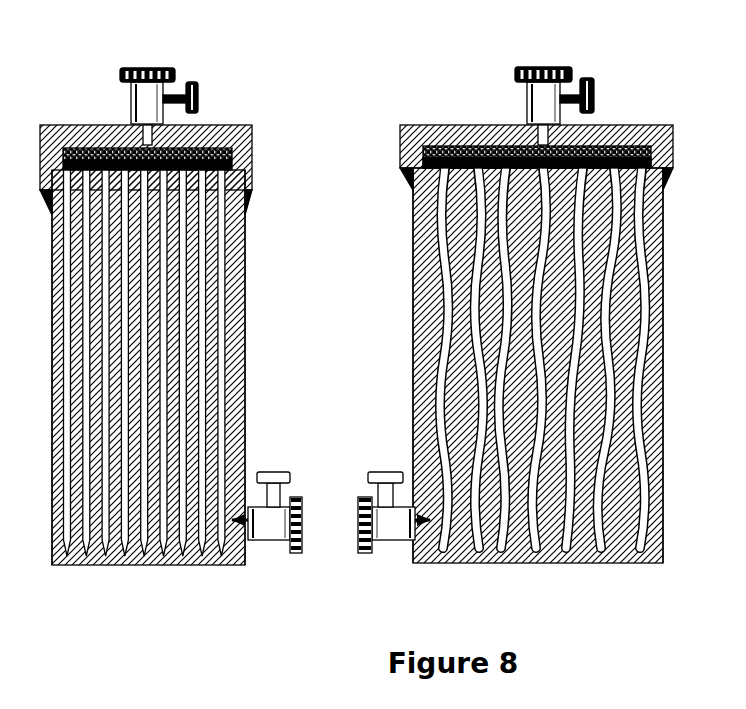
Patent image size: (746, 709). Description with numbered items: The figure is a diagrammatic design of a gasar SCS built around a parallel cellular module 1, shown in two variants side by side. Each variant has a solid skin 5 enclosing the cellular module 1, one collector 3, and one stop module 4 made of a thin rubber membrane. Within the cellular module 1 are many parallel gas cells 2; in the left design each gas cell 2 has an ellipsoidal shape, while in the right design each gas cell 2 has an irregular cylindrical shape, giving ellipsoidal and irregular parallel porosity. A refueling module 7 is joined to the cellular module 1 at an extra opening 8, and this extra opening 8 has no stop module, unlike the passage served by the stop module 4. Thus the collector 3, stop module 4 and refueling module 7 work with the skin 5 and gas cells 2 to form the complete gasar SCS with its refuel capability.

The cellular module 1 is at (243, 130).
The gas cell 2 is at (452, 413).
The collector 3 is at (548, 100).
The stop module 4 is at (245, 193).
The solid skin 5 is at (238, 308).
The refueling module 7 is at (277, 510).
The extra opening 8 is at (243, 482).